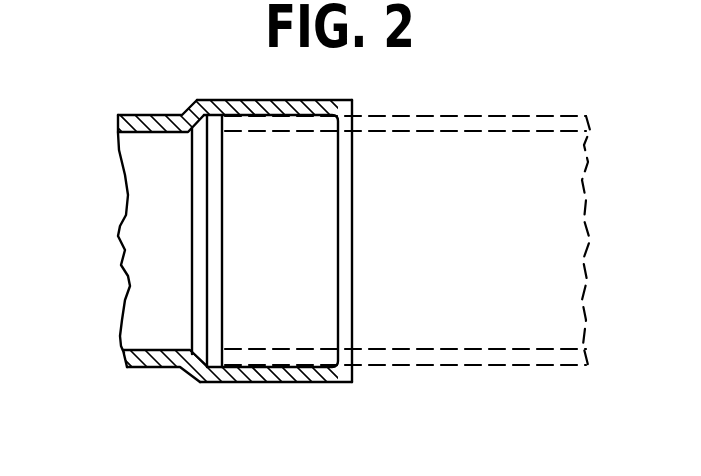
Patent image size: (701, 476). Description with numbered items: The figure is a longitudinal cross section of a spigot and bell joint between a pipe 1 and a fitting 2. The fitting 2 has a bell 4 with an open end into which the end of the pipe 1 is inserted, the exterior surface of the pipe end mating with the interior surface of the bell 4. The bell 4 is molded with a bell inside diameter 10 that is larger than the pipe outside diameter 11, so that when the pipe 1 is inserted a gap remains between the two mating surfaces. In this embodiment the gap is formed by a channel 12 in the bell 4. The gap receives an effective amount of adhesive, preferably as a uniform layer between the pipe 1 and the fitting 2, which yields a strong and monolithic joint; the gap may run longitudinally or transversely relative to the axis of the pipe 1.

The pipe 1 is at (493, 87).
The fitting 2 is at (136, 89).
The bell 4 is at (262, 383).
The bell inside diameter 10 is at (302, 126).
The pipe outside diameter 11 is at (415, 129).
The channel 12 is at (355, 368).